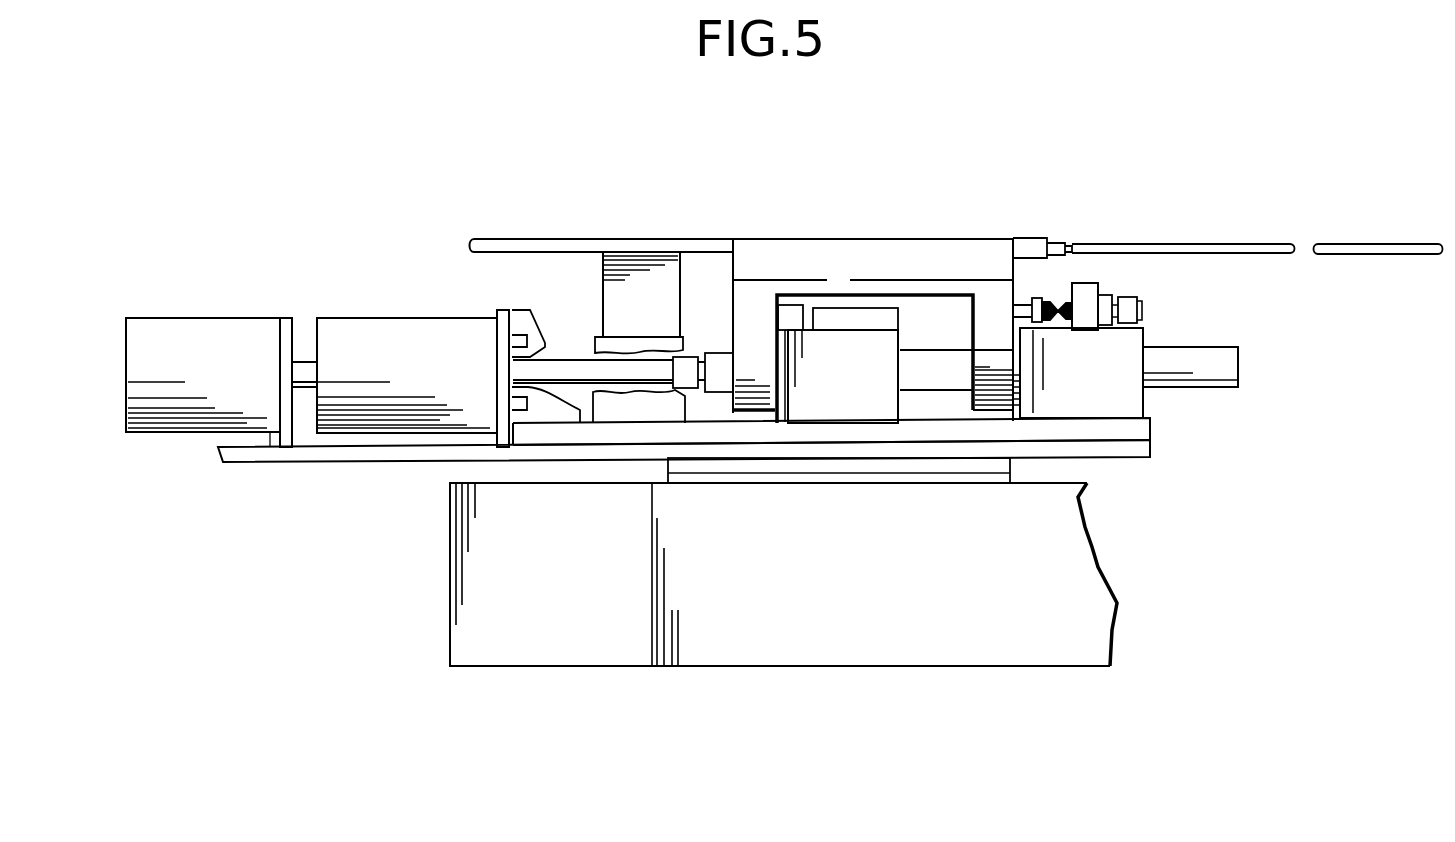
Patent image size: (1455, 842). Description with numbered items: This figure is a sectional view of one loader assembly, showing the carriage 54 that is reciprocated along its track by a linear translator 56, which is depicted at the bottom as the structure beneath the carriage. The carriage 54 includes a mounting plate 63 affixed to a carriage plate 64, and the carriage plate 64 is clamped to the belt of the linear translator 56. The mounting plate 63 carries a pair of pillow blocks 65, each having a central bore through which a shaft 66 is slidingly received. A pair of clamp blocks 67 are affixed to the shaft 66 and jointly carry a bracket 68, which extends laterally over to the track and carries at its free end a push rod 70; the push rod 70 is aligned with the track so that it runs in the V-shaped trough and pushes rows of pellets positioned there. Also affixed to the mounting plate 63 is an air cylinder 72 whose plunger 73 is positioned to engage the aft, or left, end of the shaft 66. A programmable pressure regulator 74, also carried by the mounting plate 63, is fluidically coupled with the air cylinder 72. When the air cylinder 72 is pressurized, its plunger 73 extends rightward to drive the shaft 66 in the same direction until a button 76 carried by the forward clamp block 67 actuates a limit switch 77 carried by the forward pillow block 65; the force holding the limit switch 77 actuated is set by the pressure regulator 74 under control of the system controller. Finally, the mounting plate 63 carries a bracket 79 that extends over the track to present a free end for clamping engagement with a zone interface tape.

The carriage 54 is at (1165, 327).
The linear translator 56 is at (805, 637).
The mounting plate 63 is at (349, 452).
The carriage plate 64 is at (1010, 470).
The pillow block 65 is at (830, 405).
The shaft 66 is at (1213, 378).
The clamp block 67 is at (973, 340).
The bracket 68 is at (916, 283).
The push rod 70 is at (1327, 246).
The air cylinder 72 is at (426, 337).
The plunger 73 is at (564, 367).
The programmable pressure regulator 74 is at (142, 335).
The button 76 is at (1047, 309).
The limit switch 77 is at (1106, 301).
The bracket 79 is at (600, 270).